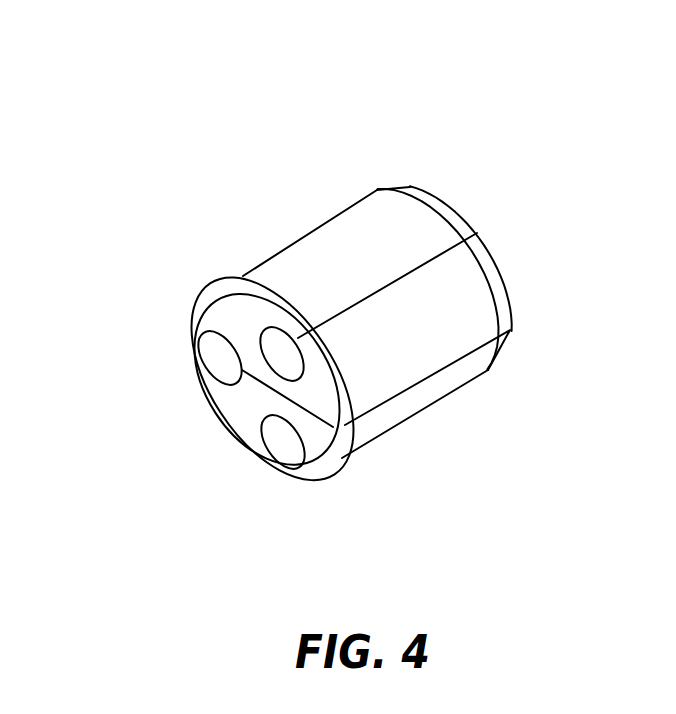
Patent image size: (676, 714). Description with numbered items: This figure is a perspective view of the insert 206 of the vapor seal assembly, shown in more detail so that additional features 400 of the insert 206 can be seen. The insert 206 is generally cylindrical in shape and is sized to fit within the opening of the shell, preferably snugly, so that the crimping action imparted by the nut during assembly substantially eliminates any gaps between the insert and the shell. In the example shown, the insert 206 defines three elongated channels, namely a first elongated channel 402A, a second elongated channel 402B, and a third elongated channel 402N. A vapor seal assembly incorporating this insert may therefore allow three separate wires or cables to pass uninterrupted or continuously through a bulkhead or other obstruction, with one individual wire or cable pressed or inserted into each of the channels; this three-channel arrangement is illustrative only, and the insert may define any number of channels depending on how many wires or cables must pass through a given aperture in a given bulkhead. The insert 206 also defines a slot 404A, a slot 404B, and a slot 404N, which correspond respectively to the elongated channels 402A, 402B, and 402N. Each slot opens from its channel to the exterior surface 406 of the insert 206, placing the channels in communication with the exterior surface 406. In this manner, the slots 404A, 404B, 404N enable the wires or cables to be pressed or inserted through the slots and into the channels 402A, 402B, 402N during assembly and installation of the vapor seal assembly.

The additional features 400 is at (193, 58).
The insert 206 is at (512, 115).
The elongated channel 402A is at (208, 359).
The elongated channel 402B is at (277, 363).
The elongated channel 402N is at (280, 453).
The slot 404A is at (518, 337).
The slot 404B is at (483, 225).
The slot 404N is at (313, 485).
The exterior surface 406 is at (343, 255).